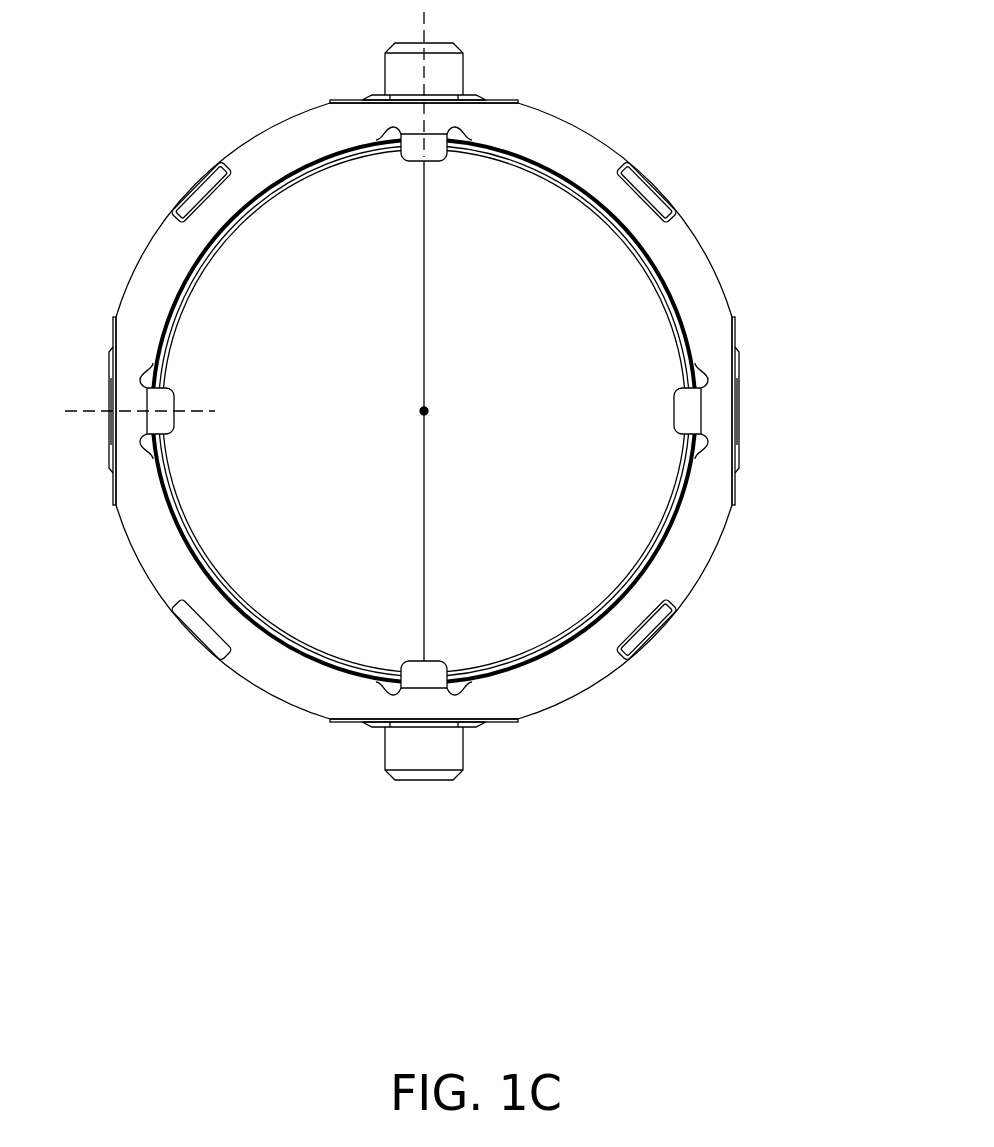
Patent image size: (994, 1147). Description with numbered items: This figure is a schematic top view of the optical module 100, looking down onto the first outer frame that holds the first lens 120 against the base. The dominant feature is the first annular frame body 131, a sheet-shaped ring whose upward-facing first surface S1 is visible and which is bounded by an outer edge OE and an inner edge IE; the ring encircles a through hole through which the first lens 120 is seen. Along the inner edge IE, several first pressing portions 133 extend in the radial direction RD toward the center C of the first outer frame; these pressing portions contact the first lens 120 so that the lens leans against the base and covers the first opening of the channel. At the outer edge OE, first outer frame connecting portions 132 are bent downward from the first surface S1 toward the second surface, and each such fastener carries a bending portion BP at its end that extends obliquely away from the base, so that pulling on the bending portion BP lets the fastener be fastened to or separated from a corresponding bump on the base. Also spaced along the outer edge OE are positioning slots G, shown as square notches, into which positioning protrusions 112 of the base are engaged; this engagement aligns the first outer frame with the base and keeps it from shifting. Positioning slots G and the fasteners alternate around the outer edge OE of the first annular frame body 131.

The optical module 100 is at (499, 477).
The positioning protrusion 112 is at (645, 630).
The first lens 120 is at (515, 190).
The first annular frame body 131 is at (499, 411).
The first outer frame connecting portion 132 is at (733, 488).
The first pressing portion 133 is at (690, 403).
The inner edge IE is at (667, 282).
The outer edge OE is at (700, 247).
The bending portion BP is at (738, 368).
The positioning slot G is at (483, 432).
The radial direction RD is at (506, 411).
The center C is at (428, 409).
The first surface S1 is at (172, 563).